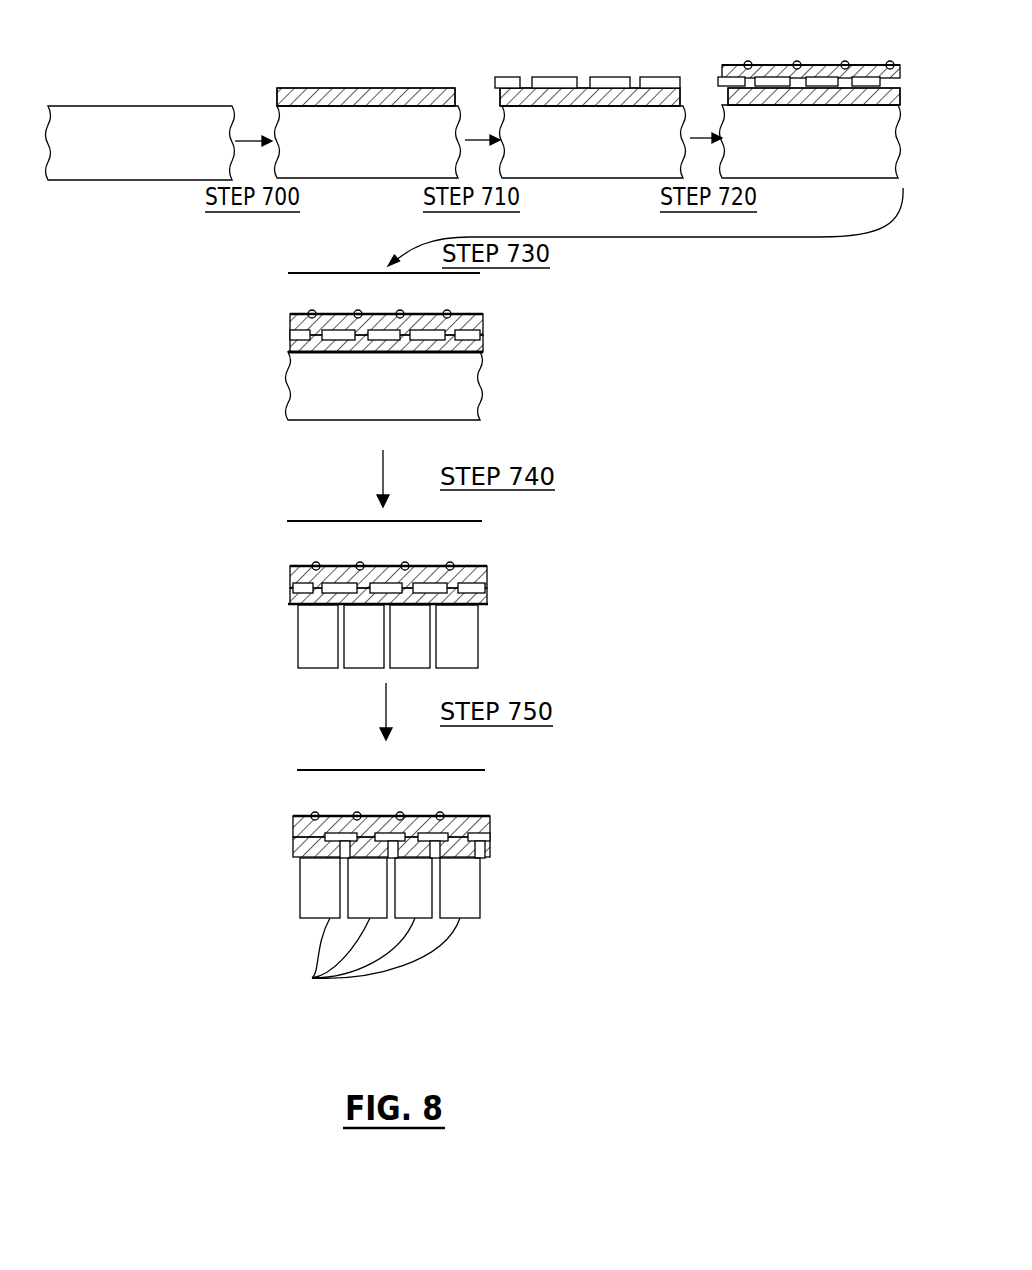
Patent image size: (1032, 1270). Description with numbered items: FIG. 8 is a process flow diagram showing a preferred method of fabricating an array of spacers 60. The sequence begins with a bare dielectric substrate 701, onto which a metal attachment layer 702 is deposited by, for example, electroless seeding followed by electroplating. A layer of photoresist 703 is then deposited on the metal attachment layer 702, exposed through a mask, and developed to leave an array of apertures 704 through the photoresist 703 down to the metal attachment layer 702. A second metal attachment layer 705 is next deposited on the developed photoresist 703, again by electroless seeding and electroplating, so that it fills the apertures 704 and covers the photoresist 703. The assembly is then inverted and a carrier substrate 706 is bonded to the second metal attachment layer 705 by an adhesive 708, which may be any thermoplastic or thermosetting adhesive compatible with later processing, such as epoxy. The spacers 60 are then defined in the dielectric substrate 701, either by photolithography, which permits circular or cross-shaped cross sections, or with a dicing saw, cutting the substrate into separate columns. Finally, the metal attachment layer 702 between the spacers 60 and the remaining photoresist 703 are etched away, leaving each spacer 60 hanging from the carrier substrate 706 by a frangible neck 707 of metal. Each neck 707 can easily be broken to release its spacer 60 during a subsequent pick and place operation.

The spacer 60 is at (369, 954).
The dielectric substrate 701 is at (166, 163).
The metal attachment layer 702 is at (440, 88).
The photoresist 703 is at (693, 44).
The apertures 704 is at (632, 77).
The second metal attachment layer 705 is at (903, 38).
The carrier substrate 706 is at (470, 297).
The frangible neck 707 is at (490, 836).
The adhesive 708 is at (482, 316).